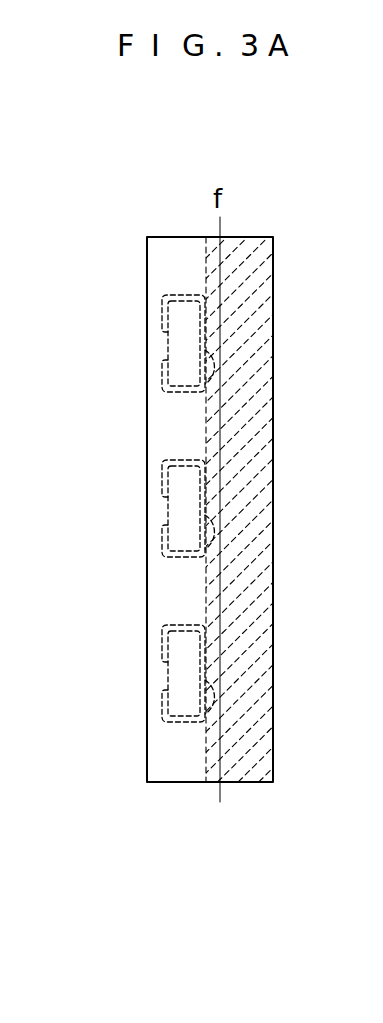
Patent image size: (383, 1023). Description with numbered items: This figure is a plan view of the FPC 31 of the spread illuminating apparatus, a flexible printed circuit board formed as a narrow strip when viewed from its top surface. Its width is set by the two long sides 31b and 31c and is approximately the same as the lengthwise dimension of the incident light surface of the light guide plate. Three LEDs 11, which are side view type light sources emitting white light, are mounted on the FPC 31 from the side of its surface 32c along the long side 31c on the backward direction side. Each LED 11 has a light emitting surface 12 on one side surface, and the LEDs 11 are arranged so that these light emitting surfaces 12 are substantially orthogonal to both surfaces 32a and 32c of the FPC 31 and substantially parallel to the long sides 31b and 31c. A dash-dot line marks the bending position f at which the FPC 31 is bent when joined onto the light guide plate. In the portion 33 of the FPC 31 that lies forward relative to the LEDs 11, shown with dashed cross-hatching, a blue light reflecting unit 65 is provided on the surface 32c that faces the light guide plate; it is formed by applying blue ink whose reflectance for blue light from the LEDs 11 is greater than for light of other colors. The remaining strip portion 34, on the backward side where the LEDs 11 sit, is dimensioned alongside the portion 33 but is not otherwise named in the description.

The LED 11 is at (172, 346).
The light emitting surface 12 is at (205, 384).
The FPC 31 is at (250, 784).
The long side 31b is at (273, 291).
The long side 31c is at (147, 290).
The surface 32a is at (178, 768).
The surface 32c is at (163, 263).
The portion 33 is at (273, 237).
The non-hatched region 34 is at (147, 237).
The blue light reflecting unit 65 is at (236, 418).